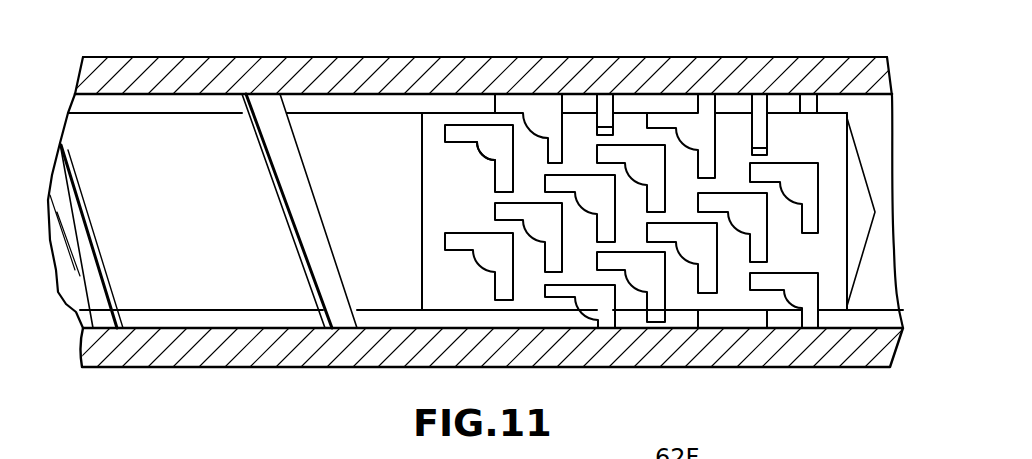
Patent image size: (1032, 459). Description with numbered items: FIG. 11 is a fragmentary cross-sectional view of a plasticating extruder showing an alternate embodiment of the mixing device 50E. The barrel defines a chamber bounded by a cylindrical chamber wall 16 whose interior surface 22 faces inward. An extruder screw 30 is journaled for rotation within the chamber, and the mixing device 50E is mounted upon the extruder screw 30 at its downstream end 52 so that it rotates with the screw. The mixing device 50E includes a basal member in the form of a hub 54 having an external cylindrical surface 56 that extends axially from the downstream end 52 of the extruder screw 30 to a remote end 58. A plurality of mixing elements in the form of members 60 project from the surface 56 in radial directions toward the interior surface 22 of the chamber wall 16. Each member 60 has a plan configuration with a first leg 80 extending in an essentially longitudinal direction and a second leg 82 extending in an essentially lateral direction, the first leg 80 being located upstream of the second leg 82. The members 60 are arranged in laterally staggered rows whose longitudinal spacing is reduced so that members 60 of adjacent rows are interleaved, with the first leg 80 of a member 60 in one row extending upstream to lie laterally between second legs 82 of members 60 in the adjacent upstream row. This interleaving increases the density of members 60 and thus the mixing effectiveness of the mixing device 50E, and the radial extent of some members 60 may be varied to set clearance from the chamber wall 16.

The chamber wall 16 is at (265, 62).
The interior surface 22 is at (212, 97).
The extruder screw 30 is at (118, 135).
The mixing device 50E is at (452, 100).
The downstream end 52 is at (422, 288).
The hub 54 is at (833, 256).
The external cylindrical surface 56 is at (812, 264).
The remote end 58 is at (876, 212).
The member 60 is at (476, 162).
The first leg 80 is at (445, 133).
The second leg 82 is at (494, 182).